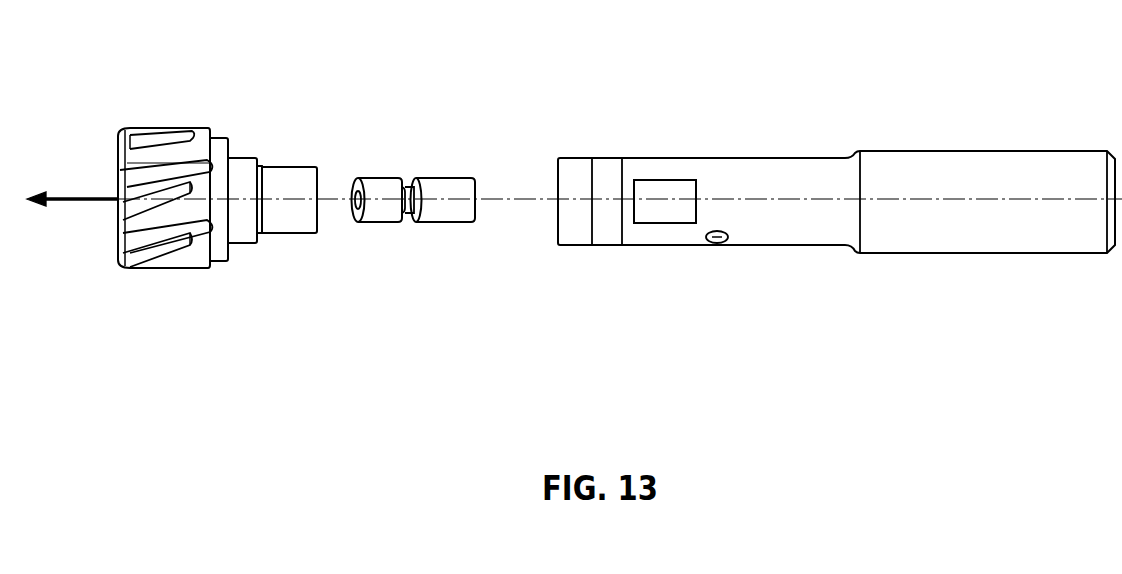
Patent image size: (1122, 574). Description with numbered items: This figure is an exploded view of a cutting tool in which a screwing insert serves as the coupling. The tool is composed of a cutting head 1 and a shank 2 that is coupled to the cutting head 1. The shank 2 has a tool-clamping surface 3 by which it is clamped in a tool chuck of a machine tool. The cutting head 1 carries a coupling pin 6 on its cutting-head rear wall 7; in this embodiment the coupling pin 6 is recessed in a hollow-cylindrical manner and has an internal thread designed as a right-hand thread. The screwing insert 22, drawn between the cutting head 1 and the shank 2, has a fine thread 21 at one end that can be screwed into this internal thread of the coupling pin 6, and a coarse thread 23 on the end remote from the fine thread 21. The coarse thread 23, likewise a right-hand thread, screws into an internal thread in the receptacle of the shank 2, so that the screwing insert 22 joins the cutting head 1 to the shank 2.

The cutting head 1 is at (206, 128).
The shank 2 is at (742, 152).
The tool-clamping surface 3 is at (985, 157).
The coupling pin 6 is at (304, 172).
The cutting-head rear wall 7 is at (228, 252).
The fine thread 21 is at (378, 184).
The screwing insert 22 is at (404, 184).
The coarse thread 23 is at (452, 214).